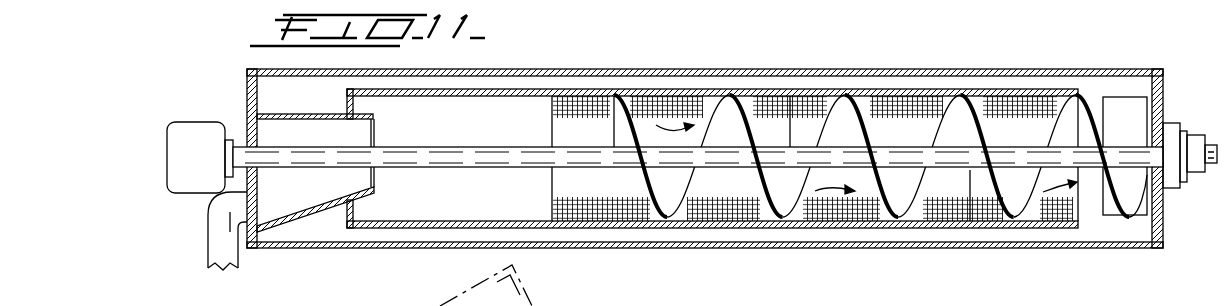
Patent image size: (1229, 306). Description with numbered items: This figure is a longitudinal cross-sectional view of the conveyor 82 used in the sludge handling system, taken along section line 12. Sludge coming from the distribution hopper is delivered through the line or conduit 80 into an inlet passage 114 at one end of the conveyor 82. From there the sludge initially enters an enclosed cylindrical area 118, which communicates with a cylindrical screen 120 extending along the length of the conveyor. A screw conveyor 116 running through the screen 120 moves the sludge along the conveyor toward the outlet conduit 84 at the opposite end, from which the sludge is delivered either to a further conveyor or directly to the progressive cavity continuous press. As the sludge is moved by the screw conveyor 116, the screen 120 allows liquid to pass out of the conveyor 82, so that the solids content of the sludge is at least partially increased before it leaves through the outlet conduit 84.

The section line 12 is at (645, 40).
The line 80 is at (225, 240).
The conveyor 82 is at (761, 258).
The outlet conduit 84 is at (1130, 125).
The inlet passage 114 is at (268, 130).
The screw conveyor 116 is at (903, 197).
The enclosed cylindrical area 118 is at (509, 203).
The cylindrical screen 120 is at (573, 125).